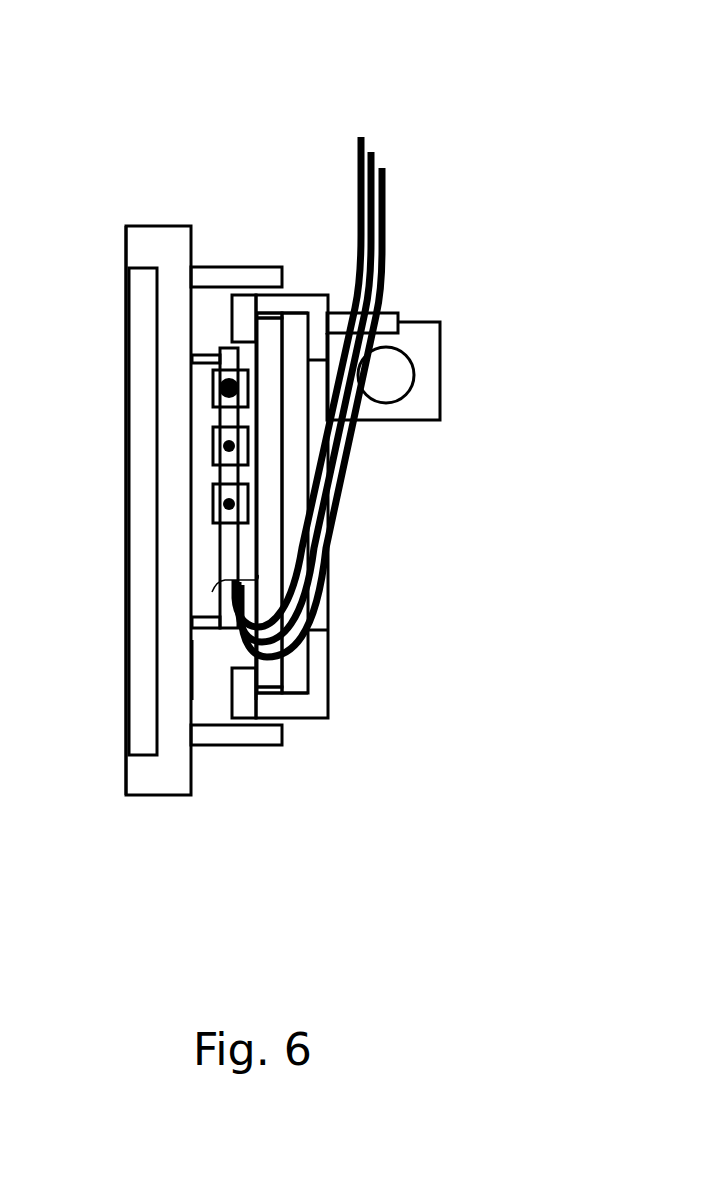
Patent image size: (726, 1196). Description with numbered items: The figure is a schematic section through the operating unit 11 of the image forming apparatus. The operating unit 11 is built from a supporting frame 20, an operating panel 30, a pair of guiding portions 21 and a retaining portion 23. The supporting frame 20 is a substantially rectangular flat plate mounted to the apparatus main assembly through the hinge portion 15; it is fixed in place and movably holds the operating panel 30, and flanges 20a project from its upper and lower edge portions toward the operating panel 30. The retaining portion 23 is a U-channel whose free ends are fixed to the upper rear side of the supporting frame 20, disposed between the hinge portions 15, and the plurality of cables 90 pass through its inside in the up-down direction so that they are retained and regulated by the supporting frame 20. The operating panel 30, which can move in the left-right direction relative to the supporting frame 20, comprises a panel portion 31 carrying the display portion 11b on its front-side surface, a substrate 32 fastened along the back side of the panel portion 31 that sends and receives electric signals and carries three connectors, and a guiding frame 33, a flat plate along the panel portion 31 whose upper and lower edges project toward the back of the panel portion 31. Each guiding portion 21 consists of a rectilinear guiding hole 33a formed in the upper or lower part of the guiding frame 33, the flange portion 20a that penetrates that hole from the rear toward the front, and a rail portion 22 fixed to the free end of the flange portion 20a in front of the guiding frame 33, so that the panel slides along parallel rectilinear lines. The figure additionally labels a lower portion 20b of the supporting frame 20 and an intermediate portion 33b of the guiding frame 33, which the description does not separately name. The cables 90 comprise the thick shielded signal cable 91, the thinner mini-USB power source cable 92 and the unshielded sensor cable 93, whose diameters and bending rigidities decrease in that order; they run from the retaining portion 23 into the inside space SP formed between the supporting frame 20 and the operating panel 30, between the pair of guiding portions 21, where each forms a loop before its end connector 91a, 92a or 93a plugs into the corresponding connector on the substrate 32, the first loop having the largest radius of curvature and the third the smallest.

The operating unit 11 is at (114, 102).
The display portion 11b is at (130, 538).
The hinge portion 15 is at (425, 337).
The supporting frame 20 is at (373, 711).
The flange portion 20a is at (299, 304).
The bottom portion of holder 20b is at (322, 630).
The guiding portion 21 is at (340, 203).
The rail portion 22 is at (236, 313).
The retaining portion 23 is at (393, 317).
The operating panel 30 is at (200, 830).
The panel portion 31 is at (147, 233).
The substrate 32 is at (225, 602).
The guiding frame 33 is at (210, 732).
The guiding hole 33a is at (268, 292).
The intermediate portion of connecting member 33b is at (270, 542).
The plurality of cables 90 is at (435, 80).
The signal cable 91 is at (388, 190).
The power source cable 92 is at (373, 157).
The sensor cable 93 is at (360, 157).
The connector 91a is at (213, 390).
The connector 92a is at (213, 445).
The connector 93a is at (213, 503).
The inside space SP is at (217, 655).